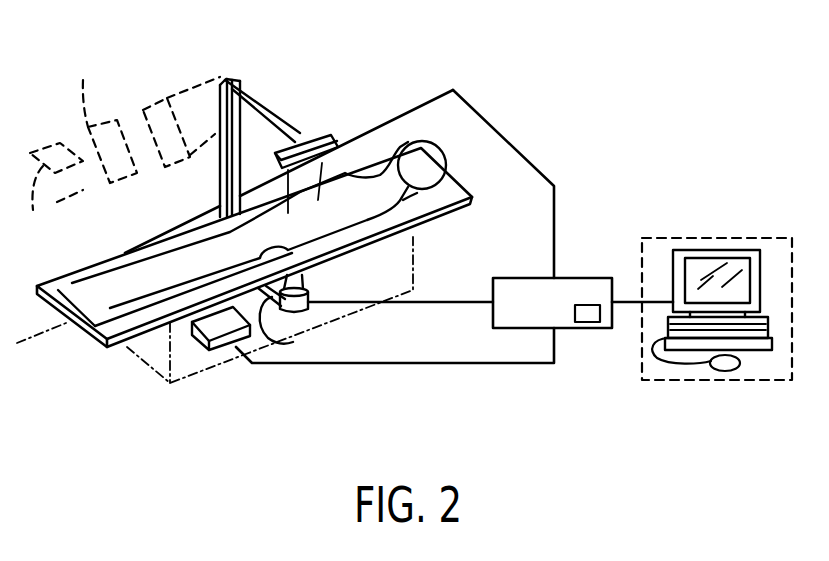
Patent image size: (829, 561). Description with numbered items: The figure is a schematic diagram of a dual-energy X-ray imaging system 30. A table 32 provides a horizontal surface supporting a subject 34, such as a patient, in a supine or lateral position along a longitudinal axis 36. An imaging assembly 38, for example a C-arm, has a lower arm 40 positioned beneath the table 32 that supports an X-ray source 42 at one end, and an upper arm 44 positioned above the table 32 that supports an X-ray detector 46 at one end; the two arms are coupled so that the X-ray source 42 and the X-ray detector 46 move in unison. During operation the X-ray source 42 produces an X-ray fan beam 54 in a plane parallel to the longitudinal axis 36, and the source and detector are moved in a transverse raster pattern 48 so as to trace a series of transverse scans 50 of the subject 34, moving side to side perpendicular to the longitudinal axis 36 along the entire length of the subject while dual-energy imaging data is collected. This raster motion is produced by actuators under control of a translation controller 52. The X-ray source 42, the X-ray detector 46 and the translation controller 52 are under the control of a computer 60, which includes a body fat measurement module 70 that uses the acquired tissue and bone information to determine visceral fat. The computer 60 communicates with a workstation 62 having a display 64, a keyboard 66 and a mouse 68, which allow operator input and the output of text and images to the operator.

The dual-energy X-ray imaging system 30 is at (522, 74).
The table 32 is at (133, 341).
The subject 34 is at (112, 278).
The longitudinal axis 36 is at (37, 338).
The imaging assembly 38 is at (240, 84).
The lower arm 40 is at (292, 341).
The X-ray source 42 is at (306, 312).
The upper arm 44 is at (268, 108).
The X-ray detector 46 is at (316, 136).
The transverse raster pattern 48 is at (151, 116).
The transverse scans 50 is at (33, 213).
The translation controller 52 is at (230, 336).
The X-ray fan beam 54 is at (346, 152).
The computer 60 is at (546, 317).
The workstation 62 is at (714, 237).
The display 64 is at (739, 261).
The keyboard 66 is at (698, 341).
The mouse 68 is at (733, 369).
The body fat measurement module 70 is at (591, 323).